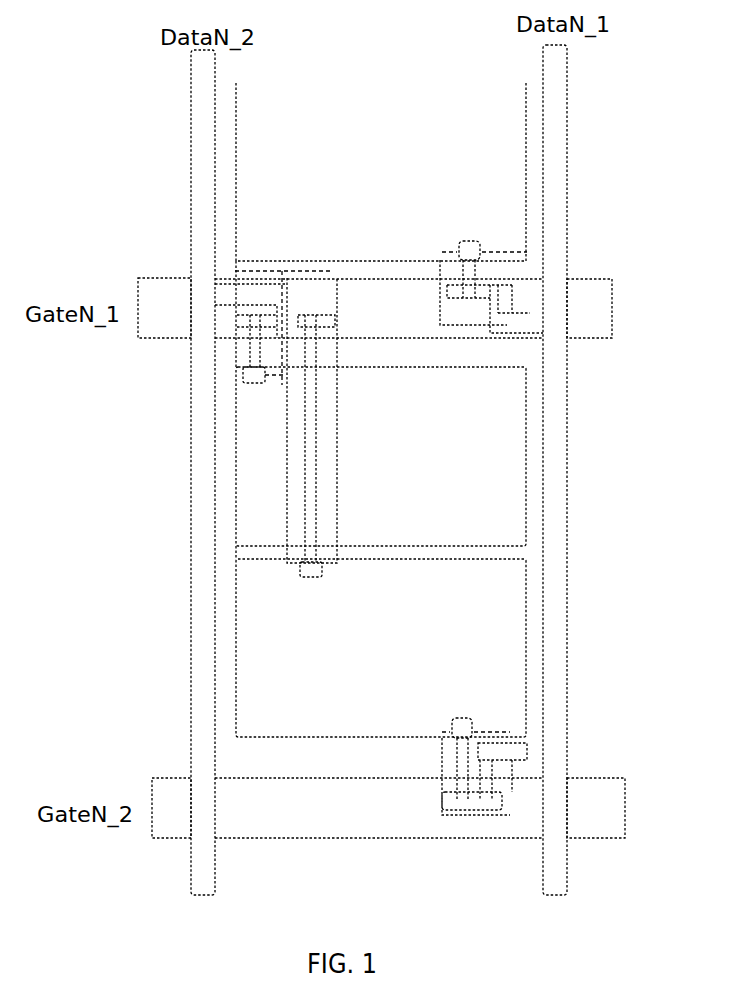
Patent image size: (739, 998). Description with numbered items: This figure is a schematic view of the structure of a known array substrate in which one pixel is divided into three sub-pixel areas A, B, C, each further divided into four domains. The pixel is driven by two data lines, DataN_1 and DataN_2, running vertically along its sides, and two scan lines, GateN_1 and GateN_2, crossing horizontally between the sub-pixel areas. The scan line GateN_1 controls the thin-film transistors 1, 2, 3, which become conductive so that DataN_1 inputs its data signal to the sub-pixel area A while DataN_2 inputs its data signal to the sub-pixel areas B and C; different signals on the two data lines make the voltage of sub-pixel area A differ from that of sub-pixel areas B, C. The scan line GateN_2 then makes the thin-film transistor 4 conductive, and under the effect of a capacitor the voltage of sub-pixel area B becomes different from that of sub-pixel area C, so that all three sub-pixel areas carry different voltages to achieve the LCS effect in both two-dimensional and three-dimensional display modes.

The sub-pixel area A is at (508, 167).
The sub-pixel area B is at (498, 449).
The sub-pixel area C is at (500, 632).
The thin-film transistor 1 is at (488, 252).
The thin-film transistor 2 is at (237, 272).
The thin-film transistor 3 is at (287, 460).
The thin-film transistor 4 is at (510, 792).